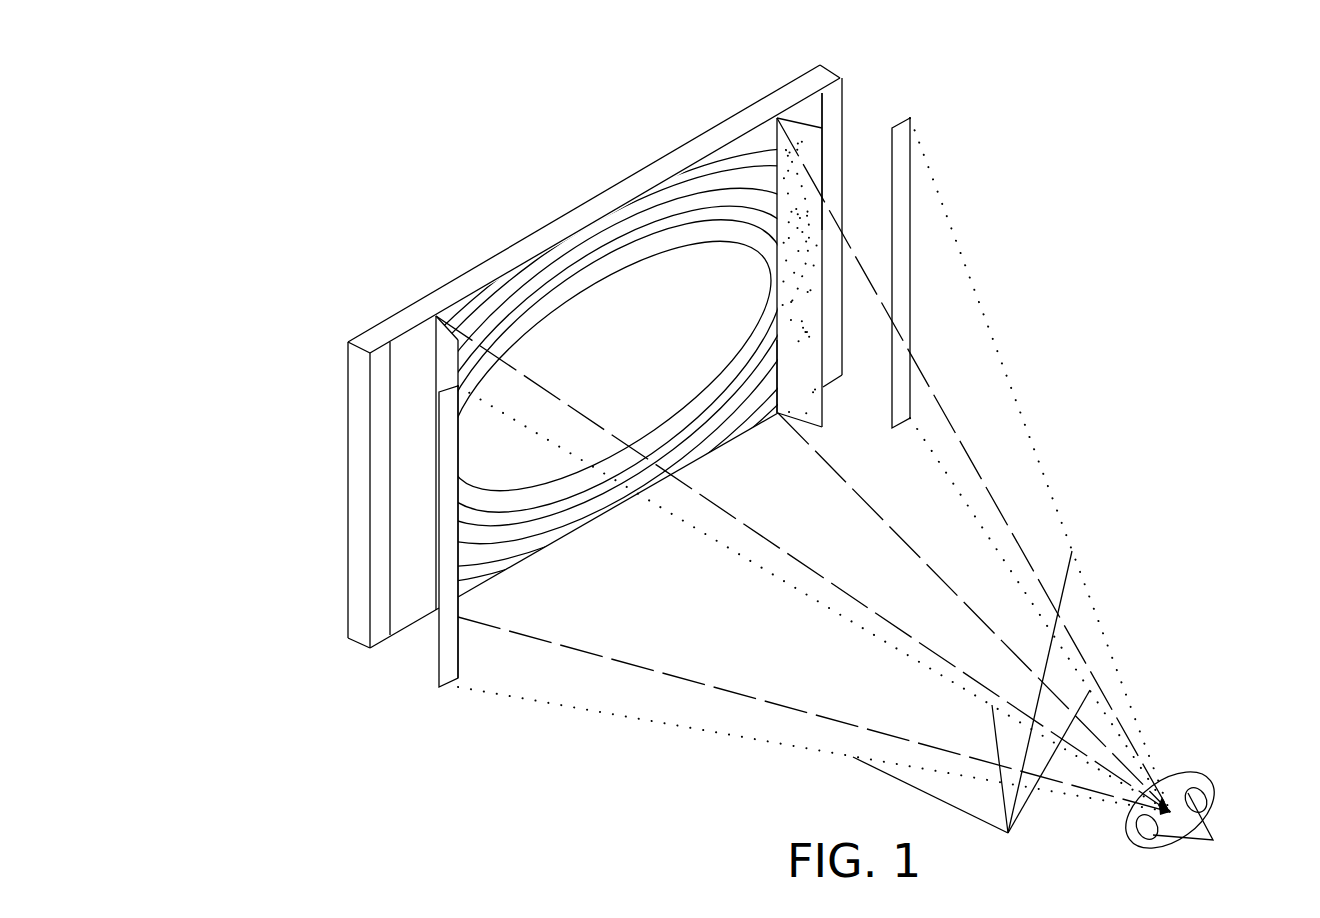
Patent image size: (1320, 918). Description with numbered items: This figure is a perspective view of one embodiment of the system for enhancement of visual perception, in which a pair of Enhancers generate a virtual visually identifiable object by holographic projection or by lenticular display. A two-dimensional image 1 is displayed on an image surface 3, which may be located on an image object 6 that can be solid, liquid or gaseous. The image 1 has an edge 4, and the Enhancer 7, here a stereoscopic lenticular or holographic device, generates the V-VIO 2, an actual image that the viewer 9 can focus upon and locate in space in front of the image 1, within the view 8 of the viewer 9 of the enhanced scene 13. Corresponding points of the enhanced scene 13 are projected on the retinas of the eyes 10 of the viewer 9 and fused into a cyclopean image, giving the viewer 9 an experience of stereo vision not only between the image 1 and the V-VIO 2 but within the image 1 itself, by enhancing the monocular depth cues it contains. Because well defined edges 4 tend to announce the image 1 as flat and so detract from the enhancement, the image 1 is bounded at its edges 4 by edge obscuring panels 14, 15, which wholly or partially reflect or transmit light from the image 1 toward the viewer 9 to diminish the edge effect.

The 2D image 1 is at (667, 317).
The V-VIO 2 is at (910, 171).
The image surface 3 is at (672, 280).
The edge 4 is at (778, 308).
The image object 6 is at (695, 142).
The Enhancer 7 is at (842, 78).
The view 8 is at (1006, 521).
The viewer 9 is at (1215, 779).
The eyes 10 is at (1207, 828).
The enhanced scene 13 is at (971, 714).
The edge obscuring panel 14 is at (817, 354).
The edge obscuring panel 15 is at (822, 222).